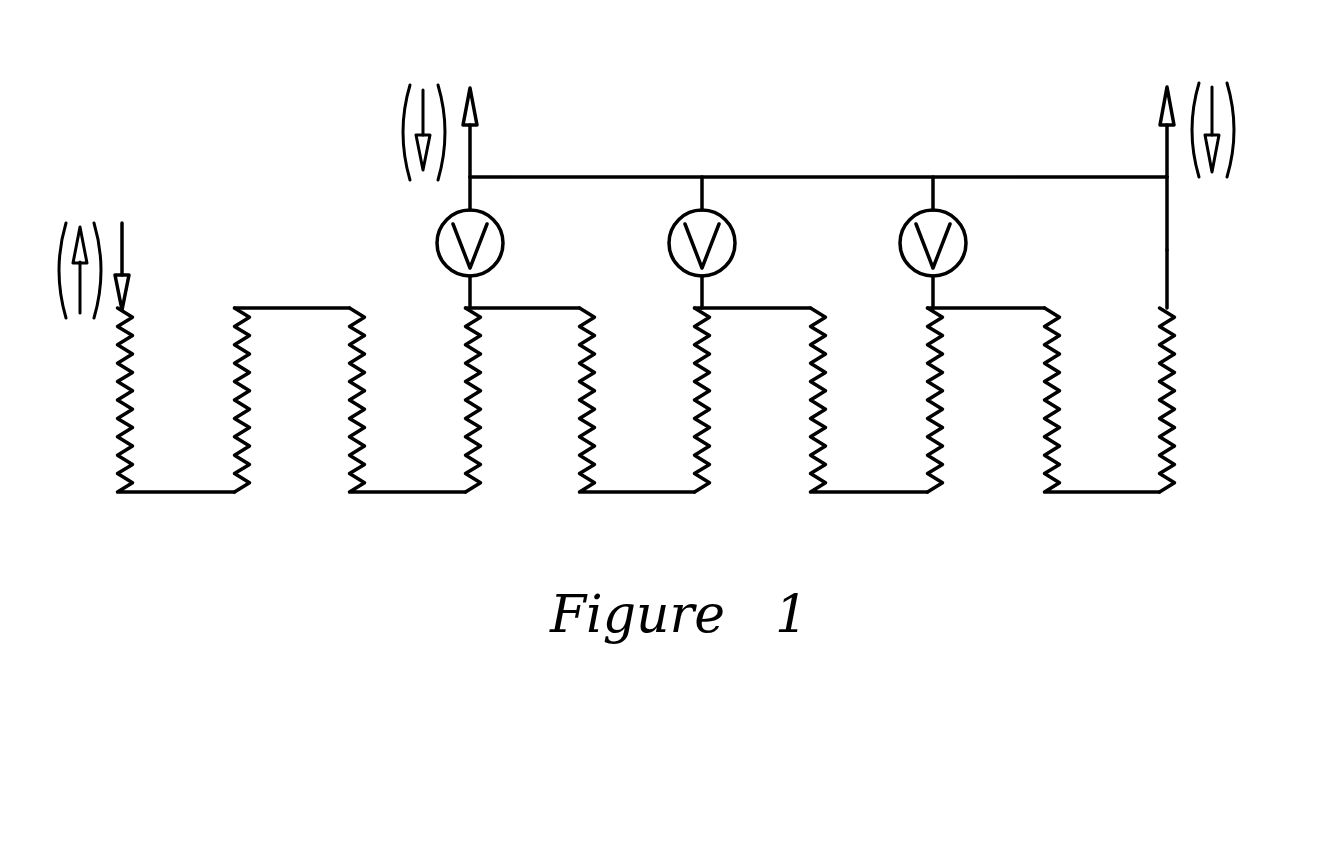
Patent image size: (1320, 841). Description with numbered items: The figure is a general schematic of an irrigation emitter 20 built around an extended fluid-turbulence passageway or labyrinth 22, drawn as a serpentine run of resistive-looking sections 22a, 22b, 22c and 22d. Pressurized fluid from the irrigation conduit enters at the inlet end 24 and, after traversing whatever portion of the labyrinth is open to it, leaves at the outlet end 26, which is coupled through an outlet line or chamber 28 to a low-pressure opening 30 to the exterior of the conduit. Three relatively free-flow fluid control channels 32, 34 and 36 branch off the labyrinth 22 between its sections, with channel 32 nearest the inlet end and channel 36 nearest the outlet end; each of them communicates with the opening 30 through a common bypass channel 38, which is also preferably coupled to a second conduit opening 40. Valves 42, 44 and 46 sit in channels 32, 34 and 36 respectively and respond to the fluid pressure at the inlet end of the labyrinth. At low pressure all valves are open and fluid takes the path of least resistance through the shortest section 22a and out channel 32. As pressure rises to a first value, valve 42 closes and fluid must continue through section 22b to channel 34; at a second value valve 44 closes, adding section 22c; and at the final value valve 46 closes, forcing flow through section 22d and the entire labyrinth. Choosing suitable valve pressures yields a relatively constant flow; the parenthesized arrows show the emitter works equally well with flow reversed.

The emitter 20 is at (303, 158).
The labyrinth 22 is at (617, 445).
The labyrinth section 22a is at (187, 493).
The labyrinth section 22b is at (647, 493).
The labyrinth section 22c is at (877, 493).
The labyrinth section 22d is at (1110, 492).
The inlet end 24 is at (122, 310).
The outlet end 26 is at (1167, 307).
The outlet line or chamber 28 is at (1167, 210).
The low-pressure opening 30 is at (1163, 107).
The fluid control channel 32 is at (473, 292).
The fluid control channel 34 is at (704, 292).
The fluid control channel 36 is at (935, 290).
The bypass channel 38 is at (773, 177).
The second conduit opening 40 is at (472, 102).
The valve 42 is at (437, 240).
The valve 44 is at (670, 223).
The valve 46 is at (903, 227).